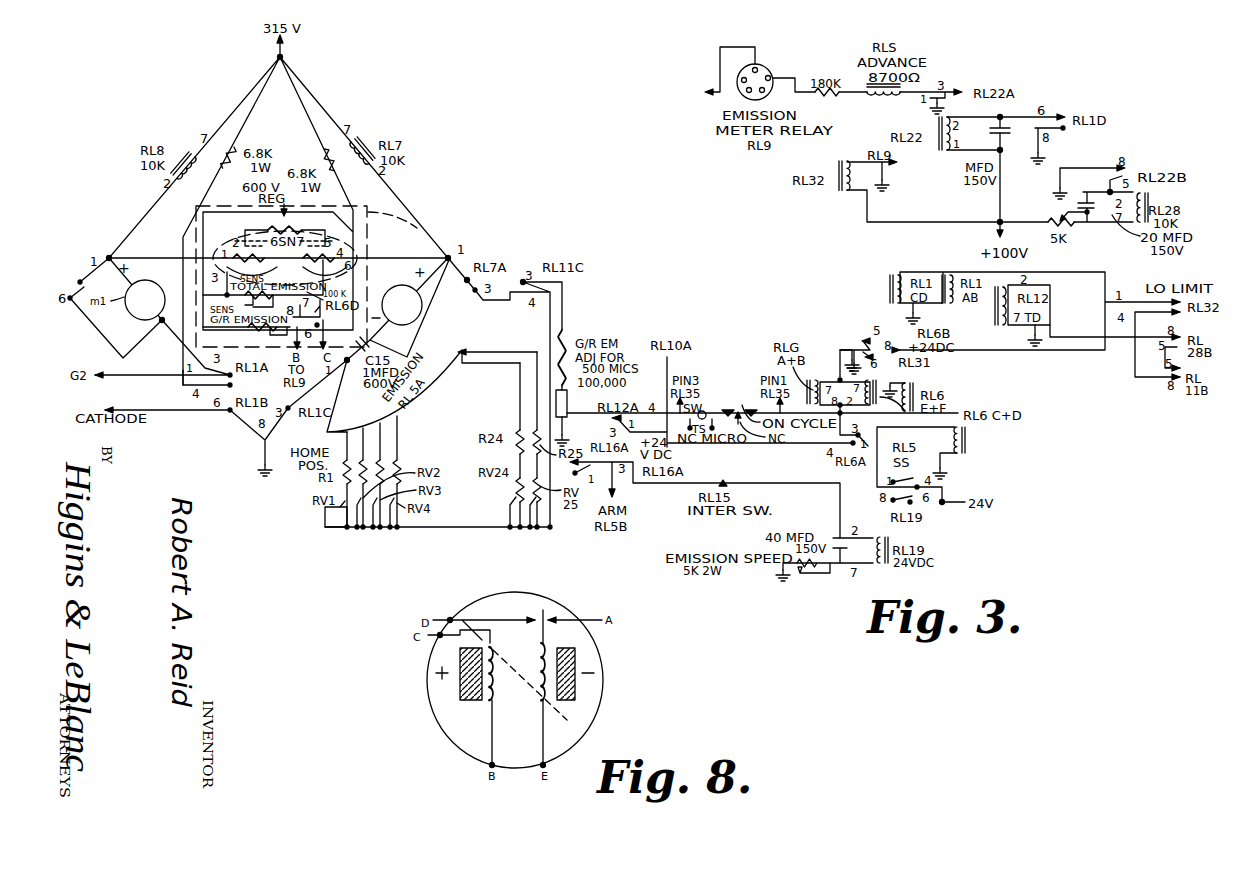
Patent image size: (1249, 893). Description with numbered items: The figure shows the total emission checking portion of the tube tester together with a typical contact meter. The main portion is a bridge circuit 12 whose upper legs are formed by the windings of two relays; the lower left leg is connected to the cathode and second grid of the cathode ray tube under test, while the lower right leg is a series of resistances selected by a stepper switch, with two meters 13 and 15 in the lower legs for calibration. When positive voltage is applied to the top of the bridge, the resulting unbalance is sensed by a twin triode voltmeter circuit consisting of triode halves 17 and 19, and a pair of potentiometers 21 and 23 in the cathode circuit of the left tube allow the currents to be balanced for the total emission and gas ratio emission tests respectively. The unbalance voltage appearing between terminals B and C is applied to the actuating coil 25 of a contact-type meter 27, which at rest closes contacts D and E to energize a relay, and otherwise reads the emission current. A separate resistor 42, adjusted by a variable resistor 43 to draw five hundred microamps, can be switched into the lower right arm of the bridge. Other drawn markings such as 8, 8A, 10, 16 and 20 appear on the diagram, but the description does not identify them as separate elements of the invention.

In FIG. 3, the switch 8 is at (703, 411).
In FIG. 3, the switch 8A is at (83, 279).
In FIG. 3, the switch contacts 10 is at (738, 410).
In FIG. 3, the bridge circuit 12 is at (460, 190).
In FIG. 3, the meter 13 is at (131, 324).
In FIG. 3, the meter 15 is at (423, 308).
In FIG. 3, the sensing circuit 16 is at (367, 243).
In FIG. 3, the triode half 17 is at (240, 238).
In FIG. 3, the triode half 19 is at (316, 238).
In FIG. 3, the capacitor 20 is at (1003, 168).
In FIG. 3, the potentiometer 21 is at (320, 312).
In FIG. 3, the potentiometer 23 is at (258, 328).
In FIG. 8, the actuating coil 25 is at (488, 705).
In FIG. 3, the contact-type meter 27 is at (764, 62).
In FIG. 8, the contact-type meter 27 is at (593, 727).
In FIG. 3, the resistor 42 is at (565, 338).
In FIG. 3, the variable resistor 43 is at (580, 400).